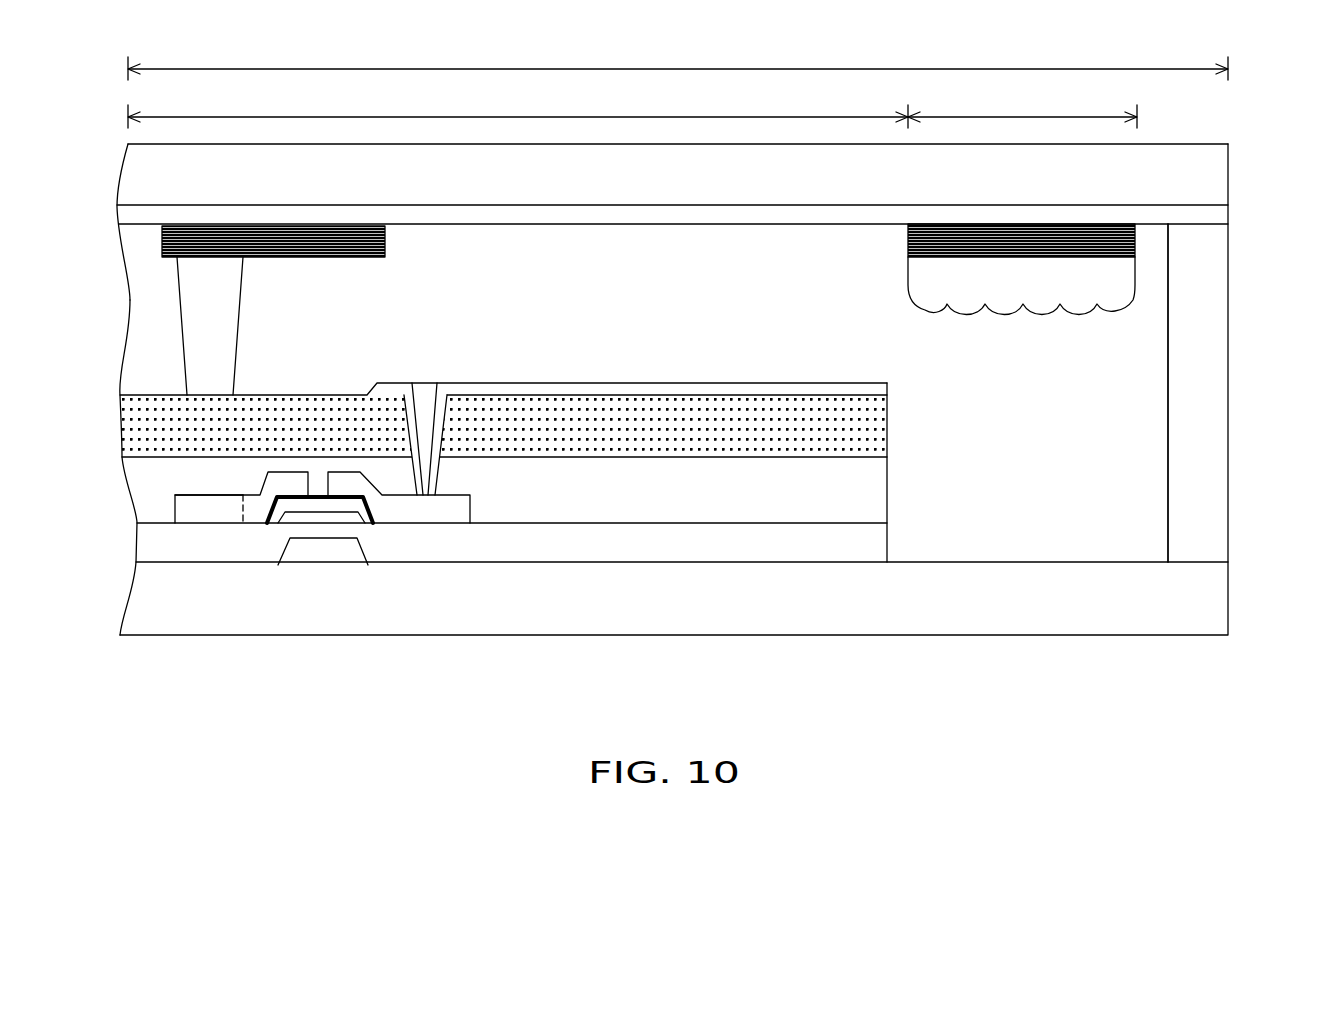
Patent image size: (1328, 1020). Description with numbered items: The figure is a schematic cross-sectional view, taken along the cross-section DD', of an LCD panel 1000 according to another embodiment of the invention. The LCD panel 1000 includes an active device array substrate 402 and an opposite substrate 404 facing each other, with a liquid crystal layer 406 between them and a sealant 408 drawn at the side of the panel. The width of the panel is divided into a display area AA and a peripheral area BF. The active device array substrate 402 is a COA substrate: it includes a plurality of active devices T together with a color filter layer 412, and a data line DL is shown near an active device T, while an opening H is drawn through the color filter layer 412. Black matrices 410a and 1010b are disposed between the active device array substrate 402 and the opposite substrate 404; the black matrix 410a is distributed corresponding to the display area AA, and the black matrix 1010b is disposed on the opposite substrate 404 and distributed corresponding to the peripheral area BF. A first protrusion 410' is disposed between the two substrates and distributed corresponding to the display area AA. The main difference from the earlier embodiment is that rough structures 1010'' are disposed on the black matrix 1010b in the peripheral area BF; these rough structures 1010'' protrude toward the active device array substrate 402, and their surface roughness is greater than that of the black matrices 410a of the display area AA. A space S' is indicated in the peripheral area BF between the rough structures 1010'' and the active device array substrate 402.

The active device array substrate 402 is at (92, 385).
The opposite substrate 404 is at (92, 145).
The liquid crystal layer 406 is at (155, 273).
The sealant 408 is at (1213, 377).
The first protrusion 410' is at (140, 326).
The black matrix 410a is at (386, 251).
The color filter layer 412 is at (563, 410).
The black matrix 1010b is at (1122, 243).
The rough structure 1010'' is at (1110, 286).
The LCD panel 1000 is at (1235, 691).
The opening H is at (425, 397).
The active device T is at (262, 478).
The data line DL is at (190, 515).
The space S' is at (1084, 520).
The cross-section D-D' DD' is at (678, 55).
The display area AA is at (518, 104).
The peripheral area BF is at (1022, 103).